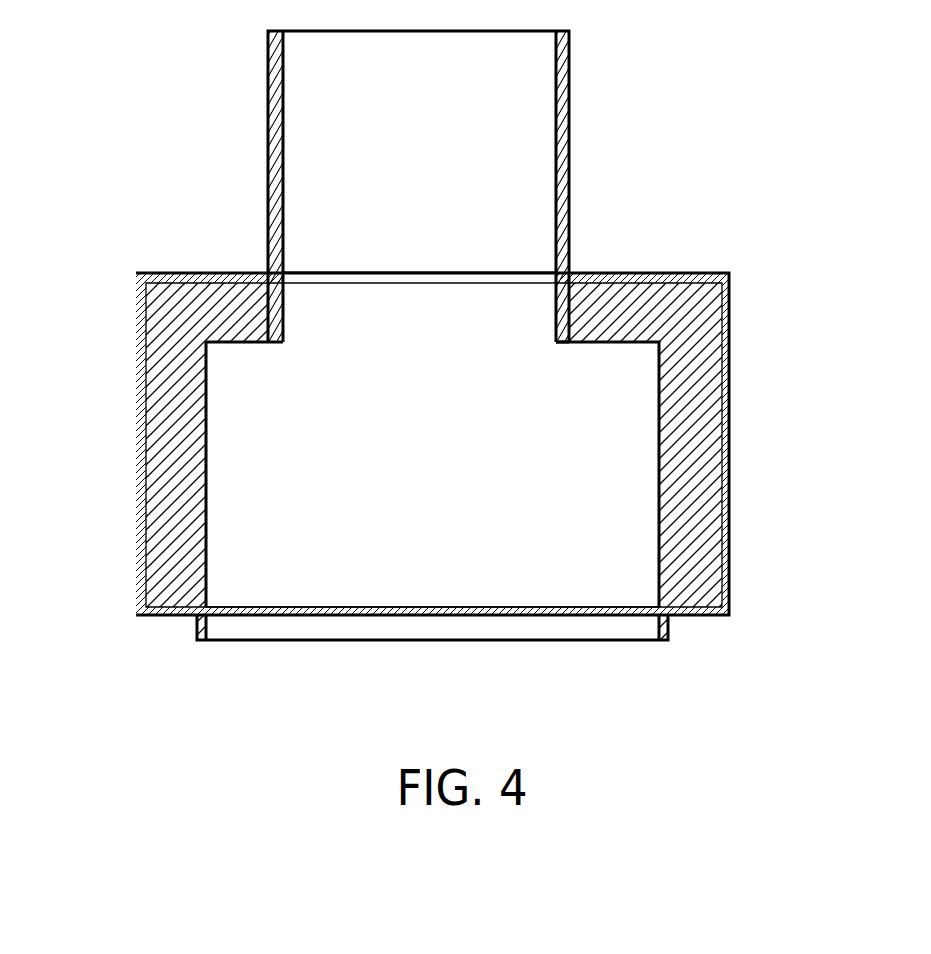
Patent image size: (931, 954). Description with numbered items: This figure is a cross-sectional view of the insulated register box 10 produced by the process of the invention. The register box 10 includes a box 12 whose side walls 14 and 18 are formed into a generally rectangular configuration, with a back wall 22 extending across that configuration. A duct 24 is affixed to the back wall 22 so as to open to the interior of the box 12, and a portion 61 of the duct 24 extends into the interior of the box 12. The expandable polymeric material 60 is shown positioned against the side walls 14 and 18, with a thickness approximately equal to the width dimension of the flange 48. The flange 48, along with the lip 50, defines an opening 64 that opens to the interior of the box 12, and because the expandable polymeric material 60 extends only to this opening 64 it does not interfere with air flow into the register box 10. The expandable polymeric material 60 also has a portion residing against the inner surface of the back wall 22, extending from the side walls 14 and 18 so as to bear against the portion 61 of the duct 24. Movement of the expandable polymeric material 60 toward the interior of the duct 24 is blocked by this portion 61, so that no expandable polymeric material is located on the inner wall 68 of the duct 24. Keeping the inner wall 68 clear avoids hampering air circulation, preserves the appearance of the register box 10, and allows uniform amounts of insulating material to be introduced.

The insulated register box 10 is at (682, 104).
The box 12 is at (730, 365).
The side wall 14 is at (730, 470).
The side wall 18 is at (136, 446).
The back wall 22 is at (637, 273).
The duct 24 is at (382, 186).
The flange 48 is at (702, 618).
The lip 50 is at (205, 626).
The expandable polymeric material 60 is at (260, 330).
The portion of the duct 61 is at (283, 311).
The opening 64 is at (456, 658).
The inner wall of the duct 68 is at (283, 103).